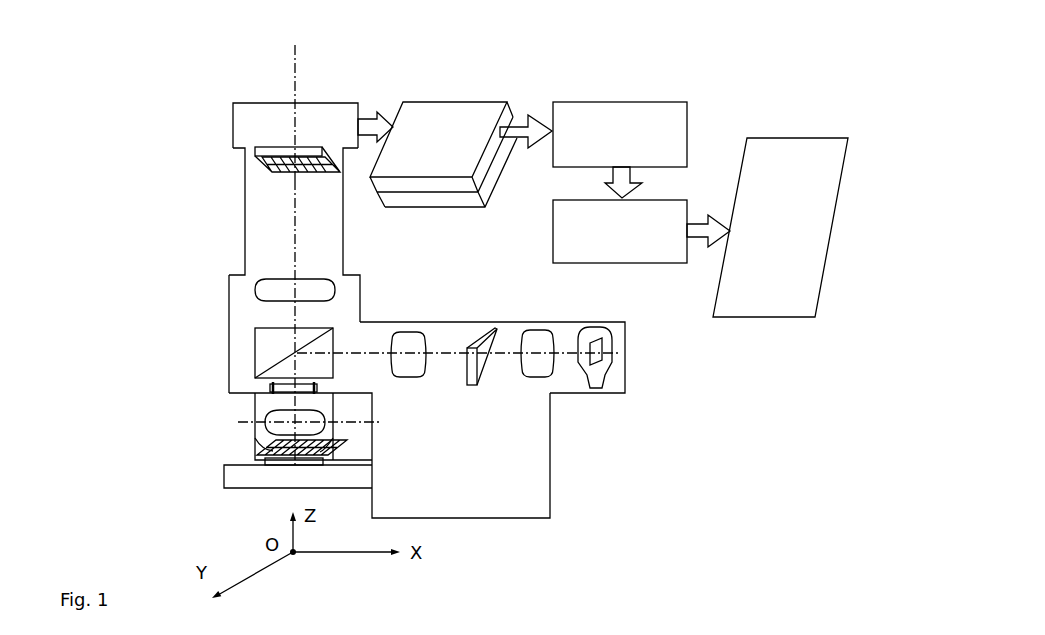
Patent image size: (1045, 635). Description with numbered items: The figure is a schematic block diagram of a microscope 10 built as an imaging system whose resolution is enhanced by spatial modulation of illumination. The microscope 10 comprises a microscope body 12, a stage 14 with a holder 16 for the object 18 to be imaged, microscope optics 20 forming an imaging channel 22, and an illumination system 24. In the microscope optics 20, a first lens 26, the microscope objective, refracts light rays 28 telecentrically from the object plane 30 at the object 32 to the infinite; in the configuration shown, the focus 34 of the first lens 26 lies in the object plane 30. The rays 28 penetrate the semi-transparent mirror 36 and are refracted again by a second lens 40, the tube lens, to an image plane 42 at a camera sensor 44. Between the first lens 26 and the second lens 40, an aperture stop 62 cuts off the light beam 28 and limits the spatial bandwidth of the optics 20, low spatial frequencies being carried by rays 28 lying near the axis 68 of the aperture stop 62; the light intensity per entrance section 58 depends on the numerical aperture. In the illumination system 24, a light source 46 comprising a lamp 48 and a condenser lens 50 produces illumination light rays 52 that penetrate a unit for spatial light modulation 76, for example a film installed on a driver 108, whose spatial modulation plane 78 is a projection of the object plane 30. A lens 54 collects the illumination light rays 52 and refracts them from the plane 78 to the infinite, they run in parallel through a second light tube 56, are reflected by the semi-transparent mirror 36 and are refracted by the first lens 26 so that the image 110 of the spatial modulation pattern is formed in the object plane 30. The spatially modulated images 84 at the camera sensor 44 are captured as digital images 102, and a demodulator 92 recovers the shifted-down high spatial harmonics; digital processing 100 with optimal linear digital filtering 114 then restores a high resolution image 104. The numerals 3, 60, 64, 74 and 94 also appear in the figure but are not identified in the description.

The beam splitter 3 is at (280, 363).
The microscope 10 is at (221, 234).
The microscope body 12 is at (550, 458).
The stage 14 is at (254, 481).
The holder 16 is at (224, 477).
The object 18 is at (210, 451).
The microscope optics 20 is at (148, 272).
The imaging channel 22 is at (164, 334).
The illumination system 24 is at (528, 356).
The first lens 26 is at (272, 434).
The light rays 28 is at (297, 213).
The object plane 30 is at (210, 451).
The object surface 32 is at (210, 451).
The focus 34 is at (341, 440).
The semi-transparent mirror 36 is at (247, 347).
The second lens 40 is at (257, 290).
The image plane 42 is at (251, 166).
The camera sensor 44 is at (255, 150).
The light source 46 is at (602, 347).
The lamp 48 is at (612, 363).
The condenser lens 50 is at (533, 377).
The illumination light rays 52 is at (445, 352).
The lens of the illumination system 54 is at (410, 377).
The second light tube 56 is at (378, 309).
The entrance section 58 is at (283, 422).
The focal plane 60 is at (263, 415).
The aperture stop 62 is at (263, 393).
The filter plate 64 is at (270, 384).
The axis 68 is at (293, 80).
The imaging optics 74 is at (185, 364).
The unit for spatial light modulation 76 is at (473, 385).
The spatial modulation plane 78 is at (485, 400).
The spatially-modulated images 84 is at (263, 165).
The demodulator 92 is at (553, 241).
The detection unit 94 is at (206, 88).
The digital processing 100 is at (603, 202).
The digital images 102 is at (438, 88).
The high resolution image 104 is at (737, 318).
The driver 108 is at (484, 380).
The image of the spatial modulation pattern 110 is at (262, 460).
The linear digital filtering 114 is at (687, 120).